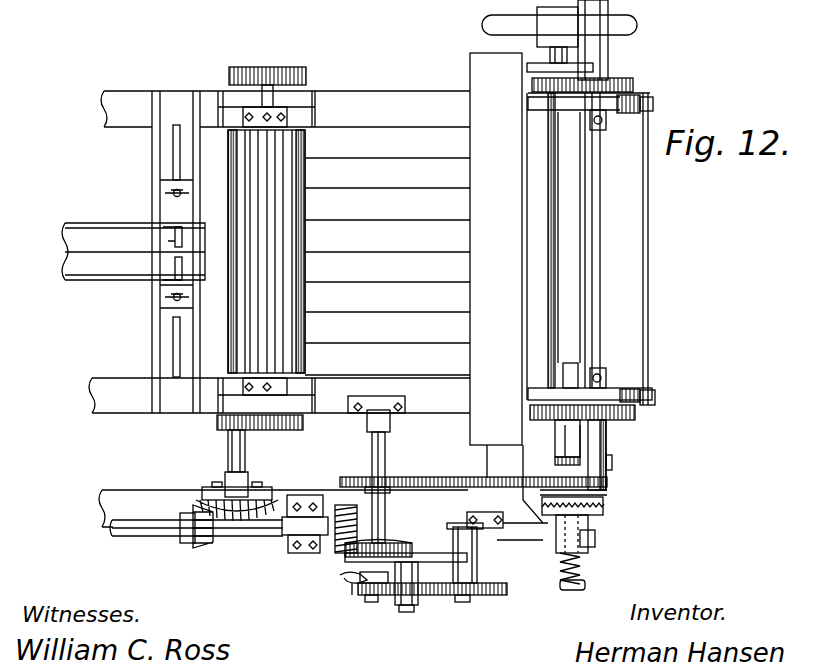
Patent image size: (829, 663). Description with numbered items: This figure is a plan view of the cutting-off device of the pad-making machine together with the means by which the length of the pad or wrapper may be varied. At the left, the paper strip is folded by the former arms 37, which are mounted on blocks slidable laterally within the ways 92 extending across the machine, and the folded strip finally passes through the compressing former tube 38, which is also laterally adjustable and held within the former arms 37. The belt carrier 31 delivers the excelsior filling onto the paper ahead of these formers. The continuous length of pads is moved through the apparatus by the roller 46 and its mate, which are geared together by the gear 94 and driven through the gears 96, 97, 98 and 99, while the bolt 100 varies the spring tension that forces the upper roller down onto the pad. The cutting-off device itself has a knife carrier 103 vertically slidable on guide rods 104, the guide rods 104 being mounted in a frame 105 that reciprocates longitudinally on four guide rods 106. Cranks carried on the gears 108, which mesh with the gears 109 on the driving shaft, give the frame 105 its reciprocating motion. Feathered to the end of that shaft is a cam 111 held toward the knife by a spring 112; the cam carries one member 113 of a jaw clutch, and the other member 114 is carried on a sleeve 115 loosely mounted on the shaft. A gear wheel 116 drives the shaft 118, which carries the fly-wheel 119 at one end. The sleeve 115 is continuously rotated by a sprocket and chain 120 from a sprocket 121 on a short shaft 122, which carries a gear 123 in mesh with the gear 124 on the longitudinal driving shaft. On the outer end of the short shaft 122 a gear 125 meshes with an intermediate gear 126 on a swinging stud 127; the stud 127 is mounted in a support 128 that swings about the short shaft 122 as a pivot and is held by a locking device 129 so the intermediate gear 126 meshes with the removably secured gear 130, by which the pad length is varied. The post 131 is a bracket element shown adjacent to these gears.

The belt carrier 31 is at (147, 539).
The formers 37 is at (178, 262).
The compressing former tube 38 is at (66, 224).
The roller 46 is at (292, 196).
The ways 92 is at (173, 100).
The gear 94 is at (268, 62).
The gear 96 is at (289, 431).
The gear 97 is at (224, 427).
The gear 98 is at (256, 518).
The gear 99 is at (200, 546).
The bolt 100 is at (269, 113).
The knife carrier 103 is at (600, 322).
The guide rods 104 is at (601, 125).
The frame 105 is at (622, 101).
The guide rods 106 is at (655, 105).
The gears 108 is at (628, 82).
The gears 109 is at (536, 80).
The cam 111 is at (660, 551).
The spring 112 is at (586, 573).
The jaw clutch member 113 is at (605, 511).
The jaw clutch member 114 is at (603, 501).
The sleeve 115 is at (565, 496).
The gear wheel 116 is at (612, 463).
The shaft 118 is at (548, 238).
The fly-wheel 119 is at (628, 30).
The sprocket and chain 120 is at (431, 478).
The sprocket 121 is at (361, 477).
The short shaft 122 is at (356, 556).
The gear 123 is at (382, 548).
The gear 124 is at (328, 555).
The gear 125 is at (369, 598).
The intermediate gear 126 is at (421, 597).
The swinging stud 127 is at (408, 608).
The support 128 is at (345, 580).
The locking device 129 is at (354, 580).
The gear 130 is at (491, 597).
The post 131 is at (453, 537).